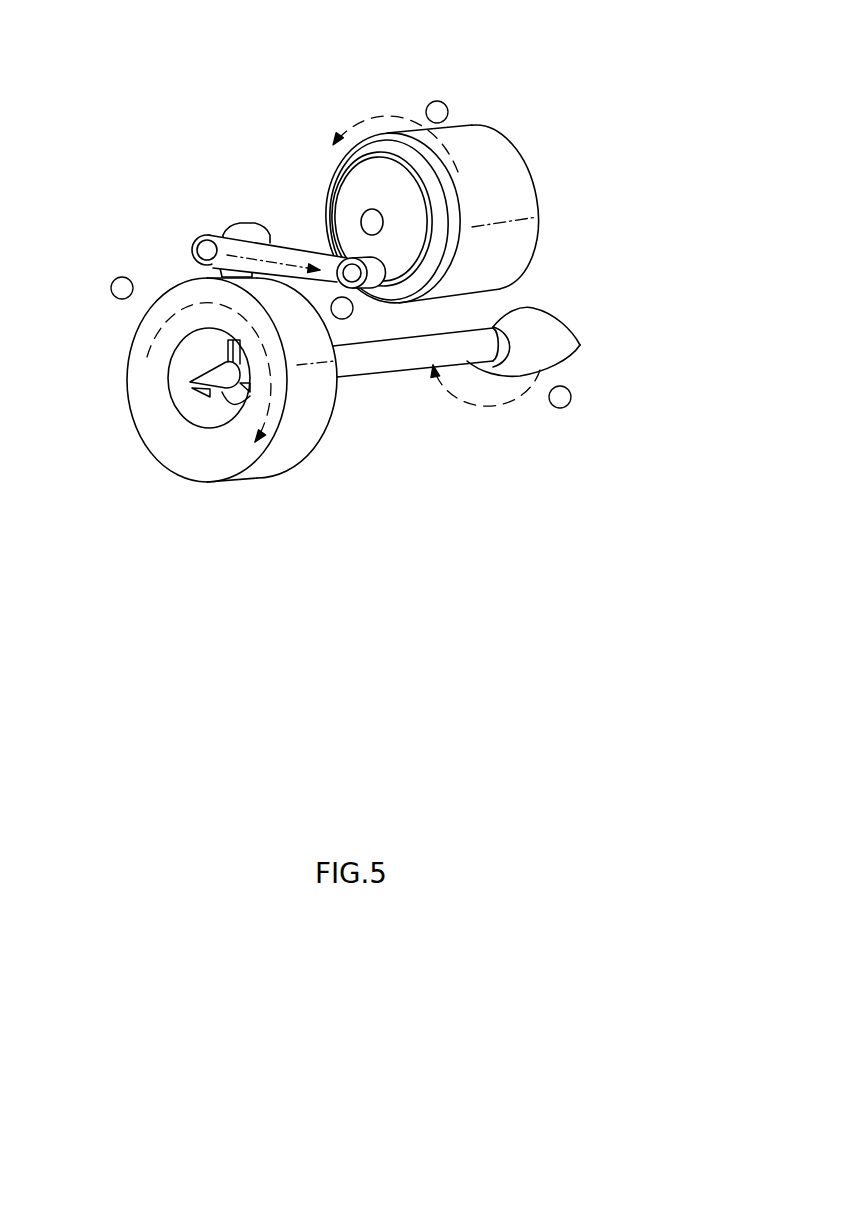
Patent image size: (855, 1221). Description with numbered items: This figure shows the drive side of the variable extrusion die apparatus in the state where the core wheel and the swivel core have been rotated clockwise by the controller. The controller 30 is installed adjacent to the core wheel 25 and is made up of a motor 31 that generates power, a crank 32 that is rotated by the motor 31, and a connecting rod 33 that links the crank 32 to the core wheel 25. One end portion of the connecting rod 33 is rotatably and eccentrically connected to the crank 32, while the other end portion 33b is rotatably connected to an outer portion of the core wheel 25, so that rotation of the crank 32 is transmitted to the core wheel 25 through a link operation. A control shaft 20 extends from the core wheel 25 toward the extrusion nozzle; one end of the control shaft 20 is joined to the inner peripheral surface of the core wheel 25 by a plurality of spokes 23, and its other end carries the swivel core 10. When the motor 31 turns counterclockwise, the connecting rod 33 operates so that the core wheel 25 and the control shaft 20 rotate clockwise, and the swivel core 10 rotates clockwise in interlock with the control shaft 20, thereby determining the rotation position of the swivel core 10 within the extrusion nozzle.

The swivel core 10 is at (557, 329).
The control shaft 20 is at (387, 358).
The spokes 23 is at (240, 341).
The core wheel 25 is at (288, 460).
The controller 30 is at (510, 86).
The motor 31 is at (525, 183).
The crank 32 is at (420, 247).
The connecting rod 33 is at (293, 247).
The other end portion 33b is at (226, 233).